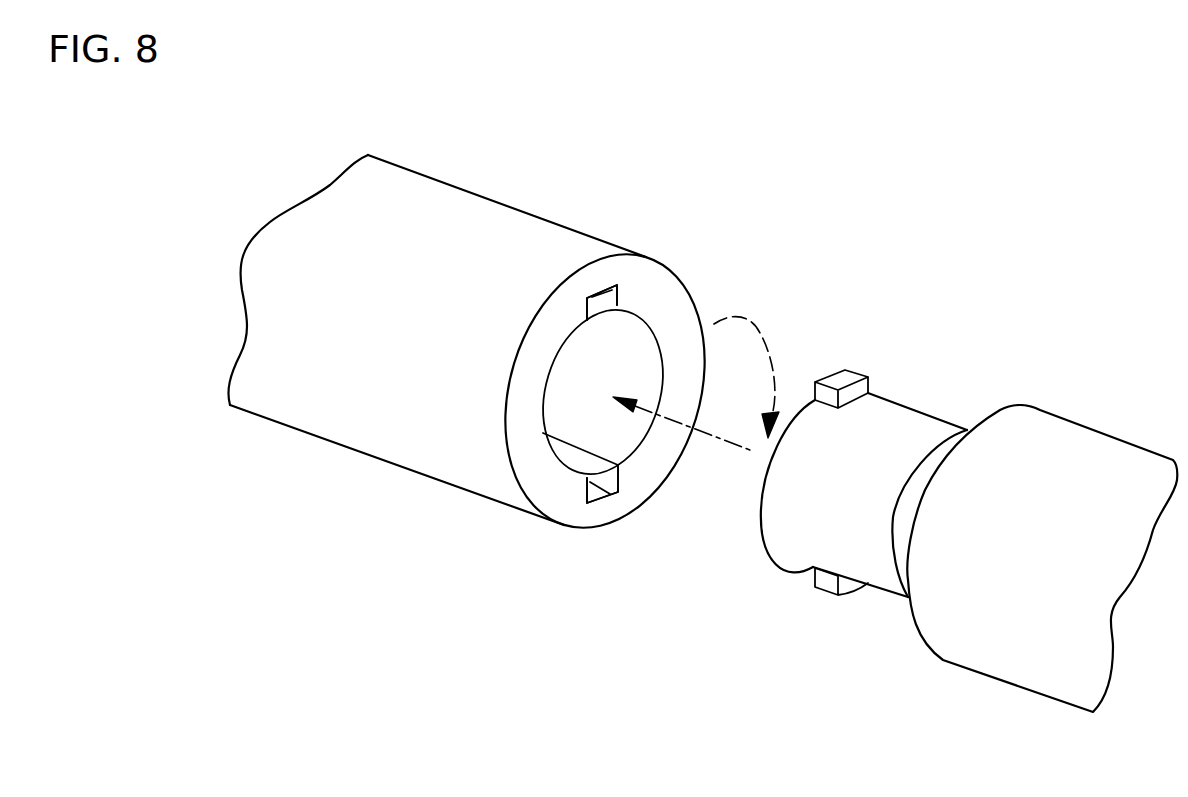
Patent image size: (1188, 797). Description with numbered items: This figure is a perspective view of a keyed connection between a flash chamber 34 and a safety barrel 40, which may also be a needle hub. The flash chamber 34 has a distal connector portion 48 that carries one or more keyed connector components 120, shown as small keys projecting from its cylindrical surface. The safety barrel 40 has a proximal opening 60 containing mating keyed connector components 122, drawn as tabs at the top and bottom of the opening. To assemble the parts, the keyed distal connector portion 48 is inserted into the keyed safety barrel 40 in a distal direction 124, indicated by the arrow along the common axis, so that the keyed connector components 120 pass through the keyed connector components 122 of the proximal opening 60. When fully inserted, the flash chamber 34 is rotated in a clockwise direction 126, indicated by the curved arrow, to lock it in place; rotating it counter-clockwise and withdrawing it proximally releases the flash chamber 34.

The flash chamber 34 is at (1077, 440).
The safety barrel 40 is at (347, 418).
The distal connector portion 48 is at (902, 423).
The proximal opening 60 is at (550, 367).
The keyed connector components 120 is at (845, 372).
The keyed connector components 122 is at (607, 293).
The distal direction 124 is at (708, 440).
The clockwise direction 126 is at (738, 323).